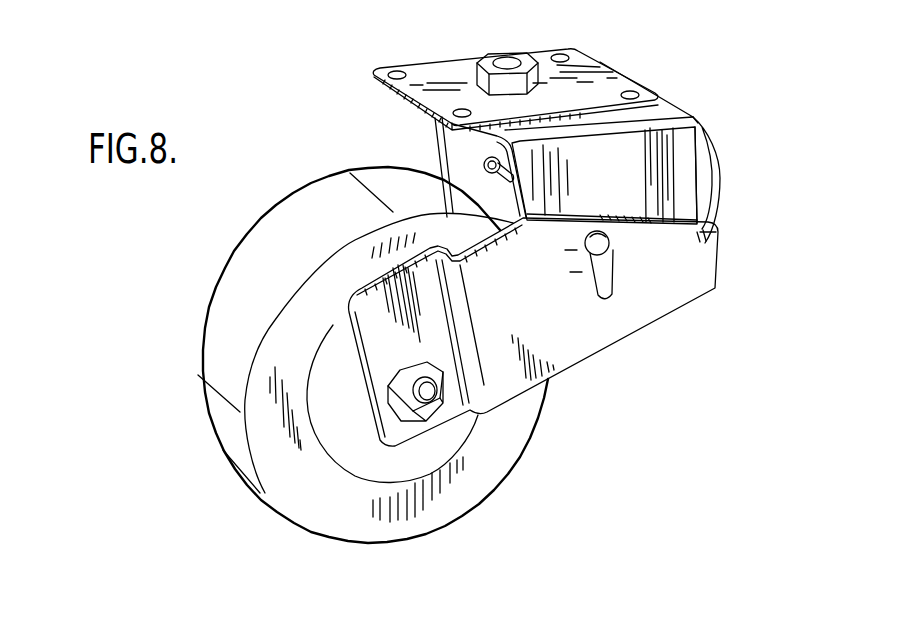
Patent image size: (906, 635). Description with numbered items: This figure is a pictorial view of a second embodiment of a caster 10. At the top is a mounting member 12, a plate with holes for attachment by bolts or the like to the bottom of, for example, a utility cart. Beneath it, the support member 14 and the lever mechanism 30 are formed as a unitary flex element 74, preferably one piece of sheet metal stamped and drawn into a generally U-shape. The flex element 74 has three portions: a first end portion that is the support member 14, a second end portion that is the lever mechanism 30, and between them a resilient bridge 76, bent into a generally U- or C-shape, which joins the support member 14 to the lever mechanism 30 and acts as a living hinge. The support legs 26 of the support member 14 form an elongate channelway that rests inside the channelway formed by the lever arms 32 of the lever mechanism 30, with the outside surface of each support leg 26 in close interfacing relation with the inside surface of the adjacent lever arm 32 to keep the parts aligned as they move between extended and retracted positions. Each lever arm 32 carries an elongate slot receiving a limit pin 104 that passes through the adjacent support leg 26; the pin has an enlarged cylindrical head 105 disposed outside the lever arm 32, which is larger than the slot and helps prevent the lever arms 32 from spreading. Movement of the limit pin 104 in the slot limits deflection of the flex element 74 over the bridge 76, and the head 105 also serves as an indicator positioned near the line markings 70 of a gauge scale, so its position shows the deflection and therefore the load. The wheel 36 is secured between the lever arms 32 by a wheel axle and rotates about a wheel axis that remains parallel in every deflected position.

The caster 10 is at (306, 105).
The mounting member 12 is at (437, 80).
The support member 14 is at (676, 138).
The support leg 26 is at (603, 187).
The lever mechanism 30 is at (628, 319).
The lever arm 32 is at (667, 298).
The wheel 36 is at (283, 483).
The line markings 70 is at (574, 291).
The flex element 74 is at (724, 102).
The resilient bridge 76 is at (738, 177).
The limit pin 104 is at (488, 170).
The enlarged cylindrical head 105 is at (609, 247).